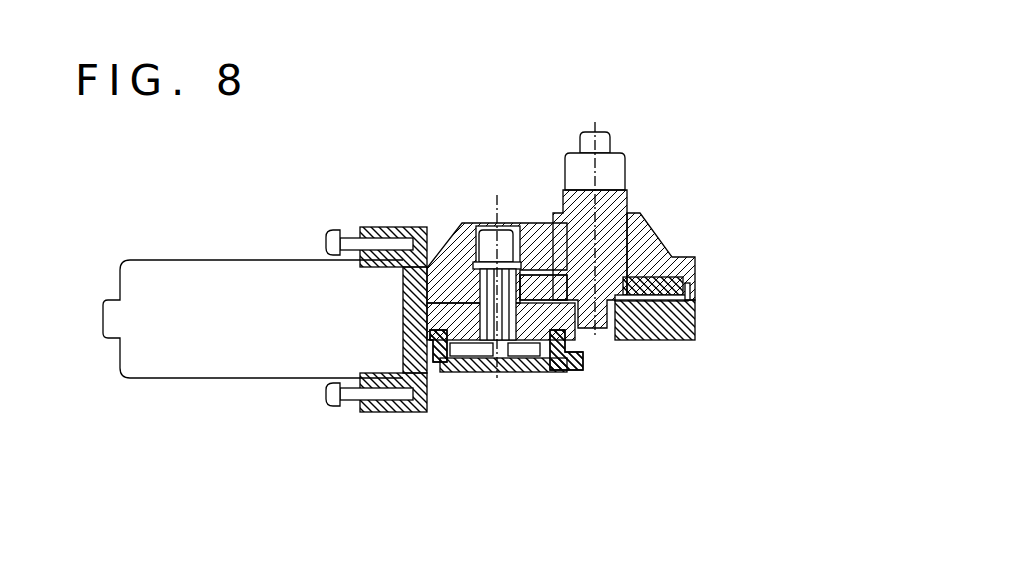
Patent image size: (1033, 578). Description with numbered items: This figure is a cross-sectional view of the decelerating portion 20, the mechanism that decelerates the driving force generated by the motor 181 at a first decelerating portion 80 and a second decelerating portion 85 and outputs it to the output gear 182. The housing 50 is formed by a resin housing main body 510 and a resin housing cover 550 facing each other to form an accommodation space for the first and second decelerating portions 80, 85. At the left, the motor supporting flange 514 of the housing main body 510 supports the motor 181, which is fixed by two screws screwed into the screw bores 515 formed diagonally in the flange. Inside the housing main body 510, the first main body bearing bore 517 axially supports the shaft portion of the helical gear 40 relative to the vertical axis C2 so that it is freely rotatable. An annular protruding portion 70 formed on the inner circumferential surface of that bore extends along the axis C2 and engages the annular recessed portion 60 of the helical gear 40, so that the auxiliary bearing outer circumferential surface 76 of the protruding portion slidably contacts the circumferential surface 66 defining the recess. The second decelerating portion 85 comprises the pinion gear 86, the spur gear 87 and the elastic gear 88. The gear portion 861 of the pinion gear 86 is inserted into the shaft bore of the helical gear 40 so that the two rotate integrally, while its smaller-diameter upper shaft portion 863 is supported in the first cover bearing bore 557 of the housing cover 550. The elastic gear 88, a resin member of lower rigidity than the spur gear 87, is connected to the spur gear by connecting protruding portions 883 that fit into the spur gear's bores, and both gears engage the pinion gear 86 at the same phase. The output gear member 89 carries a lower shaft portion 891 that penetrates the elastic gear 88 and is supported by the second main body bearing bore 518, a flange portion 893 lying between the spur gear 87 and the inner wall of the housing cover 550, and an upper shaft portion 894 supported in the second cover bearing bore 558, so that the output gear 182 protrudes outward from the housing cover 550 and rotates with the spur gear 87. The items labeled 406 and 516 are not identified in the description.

The decelerating portion 20 is at (650, 178).
The helical gear 40 is at (519, 318).
The housing 50 is at (717, 378).
The annular recessed portion 60 is at (538, 373).
The annular protruding portion 70 is at (575, 345).
The radially inner circumferential surface 66 is at (450, 394).
The auxiliary bearing outer circumferential surface 76 is at (433, 375).
The first decelerating portion 80 is at (472, 398).
The second decelerating portion 85 is at (527, 201).
The pinion gear 86 is at (461, 190).
The spur gear 87 is at (690, 284).
The elastic gear 88 is at (717, 378).
The output gear member 89 is at (650, 220).
The motor 181 is at (205, 293).
The output gear 182 is at (650, 220).
The bottom plate 406 is at (503, 445).
The housing main body 510 is at (717, 378).
The motor supporting flange 514 is at (370, 410).
The screw bores 515 is at (397, 408).
The bolt 516 is at (325, 395).
The first main body bearing bore 517 is at (560, 365).
The second main body bearing bore 518 is at (666, 378).
The housing cover 550 is at (695, 263).
The first cover bearing bore 557 is at (532, 220).
The second cover bearing bore 558 is at (689, 231).
The gear portion 861 is at (461, 190).
The upper shaft portion 863 is at (497, 190).
The connecting protruding portion 883 is at (547, 215).
The lower shaft portion 891 is at (539, 373).
The flange portion 893 is at (713, 257).
The upper shaft portion 894 is at (622, 215).
The rotational axis C2 is at (497, 273).